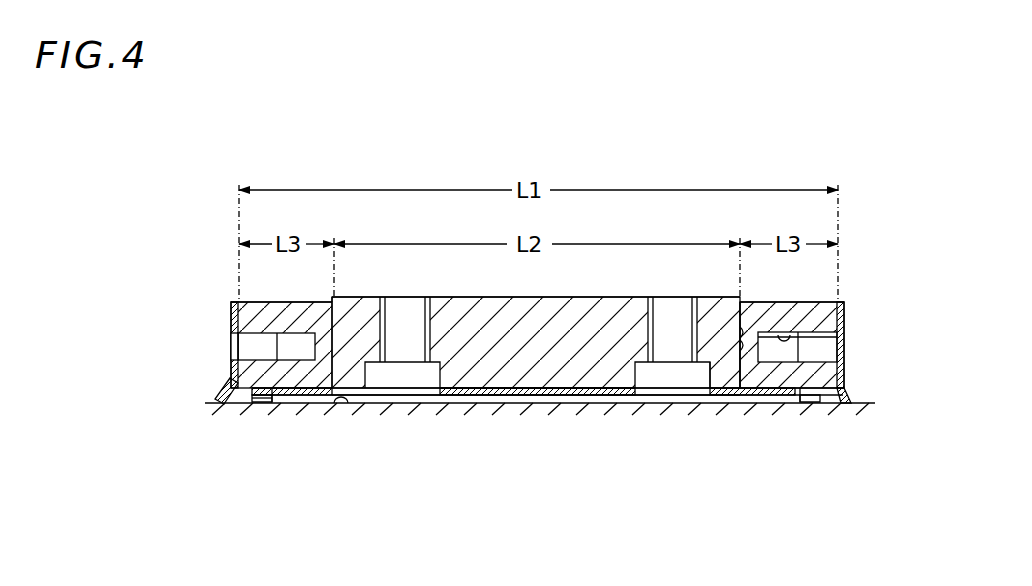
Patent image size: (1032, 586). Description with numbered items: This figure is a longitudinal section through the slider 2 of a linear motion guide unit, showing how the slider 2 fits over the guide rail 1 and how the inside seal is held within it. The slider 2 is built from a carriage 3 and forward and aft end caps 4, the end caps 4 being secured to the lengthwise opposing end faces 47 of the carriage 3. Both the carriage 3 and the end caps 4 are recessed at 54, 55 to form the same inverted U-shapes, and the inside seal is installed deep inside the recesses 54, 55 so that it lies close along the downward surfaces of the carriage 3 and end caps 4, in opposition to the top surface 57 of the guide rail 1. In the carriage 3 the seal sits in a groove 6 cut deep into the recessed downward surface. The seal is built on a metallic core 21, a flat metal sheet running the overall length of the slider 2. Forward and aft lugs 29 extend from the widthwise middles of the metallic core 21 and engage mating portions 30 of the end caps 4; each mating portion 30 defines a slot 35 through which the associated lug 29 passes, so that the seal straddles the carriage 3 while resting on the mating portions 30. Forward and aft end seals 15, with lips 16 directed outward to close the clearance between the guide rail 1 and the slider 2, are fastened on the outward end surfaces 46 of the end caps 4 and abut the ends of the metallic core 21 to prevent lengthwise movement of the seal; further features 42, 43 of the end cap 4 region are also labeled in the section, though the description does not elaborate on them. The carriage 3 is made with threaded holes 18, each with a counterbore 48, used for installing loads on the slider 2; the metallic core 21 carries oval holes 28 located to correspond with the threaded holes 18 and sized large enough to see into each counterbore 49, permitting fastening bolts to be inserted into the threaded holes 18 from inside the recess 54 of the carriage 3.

The guide rail 1 is at (486, 415).
The slider 2 is at (603, 295).
The carriage 3 is at (580, 348).
The end cap 4 is at (235, 302).
The groove 6 is at (522, 400).
The end seal 15 is at (232, 325).
The lip 16 is at (222, 400).
The threaded hole 18 is at (388, 330).
The metallic core 21 is at (562, 398).
The oval hole 28 is at (408, 390).
The lug 29 is at (283, 404).
The mating portion 30 is at (266, 400).
The slot 35 is at (255, 400).
The end housing 42 is at (820, 302).
The top wall 43 is at (263, 302).
The outward end surface 46 is at (230, 368).
The end face 47 is at (320, 297).
The counterbore 48 is at (692, 368).
The counterbore 49 is at (820, 348).
The recess 54 is at (471, 400).
The recess 55 is at (323, 405).
The top surface 57 is at (341, 405).